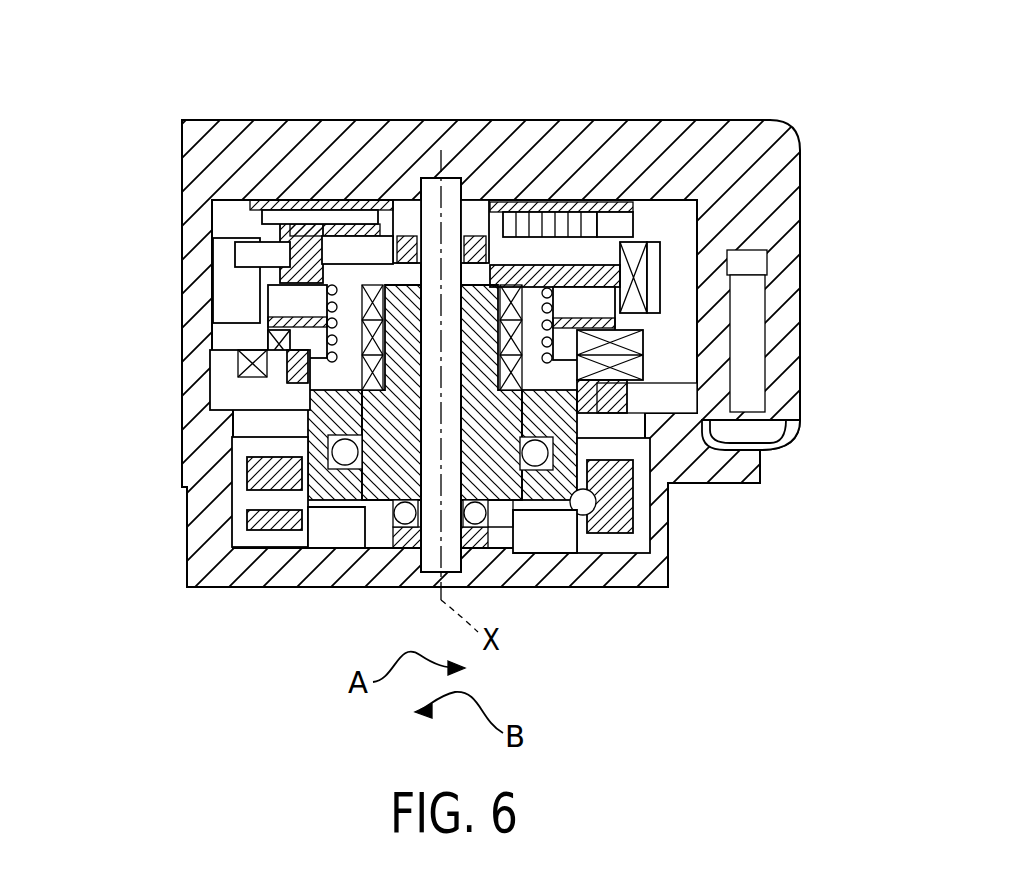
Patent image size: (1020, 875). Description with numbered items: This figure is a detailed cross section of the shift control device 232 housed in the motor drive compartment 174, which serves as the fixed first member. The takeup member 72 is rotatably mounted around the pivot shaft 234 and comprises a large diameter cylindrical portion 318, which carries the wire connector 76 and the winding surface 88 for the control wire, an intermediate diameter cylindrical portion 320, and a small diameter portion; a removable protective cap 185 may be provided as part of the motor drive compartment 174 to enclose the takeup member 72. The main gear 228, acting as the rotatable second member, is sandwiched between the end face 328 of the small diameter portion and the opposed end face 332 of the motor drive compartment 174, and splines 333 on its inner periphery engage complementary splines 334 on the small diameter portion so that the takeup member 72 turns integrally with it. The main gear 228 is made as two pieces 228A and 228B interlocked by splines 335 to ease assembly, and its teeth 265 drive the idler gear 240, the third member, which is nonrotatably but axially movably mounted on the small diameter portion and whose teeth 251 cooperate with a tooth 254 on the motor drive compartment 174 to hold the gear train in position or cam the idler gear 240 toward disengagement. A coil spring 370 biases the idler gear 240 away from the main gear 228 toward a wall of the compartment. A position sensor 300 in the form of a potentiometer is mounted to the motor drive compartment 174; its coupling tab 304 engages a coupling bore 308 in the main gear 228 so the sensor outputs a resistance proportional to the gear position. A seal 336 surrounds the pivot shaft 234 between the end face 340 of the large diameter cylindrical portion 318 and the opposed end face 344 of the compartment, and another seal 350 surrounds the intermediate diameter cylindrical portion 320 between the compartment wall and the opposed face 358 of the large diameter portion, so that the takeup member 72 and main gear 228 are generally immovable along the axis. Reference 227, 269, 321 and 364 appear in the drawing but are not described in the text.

The motor drive compartment 174 is at (770, 165).
The shift control device 232 is at (345, 100).
The position sensor 300 is at (330, 205).
The coupling tab 304 is at (288, 245).
The coupling bore 308 is at (320, 268).
The end face of motor drive compartment 332 is at (380, 205).
The end face of small diameter cylindrical portion 328 is at (441, 178).
The rotating seal ring 321 is at (480, 340).
The splines 333 is at (525, 350).
The coil spring 370 is at (570, 320).
The splines 334 is at (640, 290).
The seal 336 is at (400, 515).
The main gear 228 is at (222, 250).
The seal holder 227 is at (222, 272).
The idler gear 240 is at (268, 300).
The packing element 269 is at (268, 345).
The teeth 265 is at (279, 344).
The main gear piece 228A is at (640, 322).
The teeth 251 is at (288, 400).
The tooth 254 is at (297, 366).
The splines 335 is at (745, 372).
The winding surface 88 is at (300, 500).
The main gear piece 228B is at (740, 458).
The bracket 364 is at (640, 470).
The seal 350 is at (640, 490).
The takeup member 72 is at (243, 523).
The wire connector 76 is at (645, 540).
The removable protective cap 185 is at (250, 560).
The large diameter cylindrical portion 318 is at (300, 540).
The end face of large diameter cylindrical portion 340 is at (385, 480).
The pivot shaft 234 is at (432, 570).
The end face of motor drive compartment 344 is at (475, 520).
The face of large diameter cylindrical portion 358 is at (540, 505).
The intermediate diameter cylindrical portion 320 is at (490, 440).